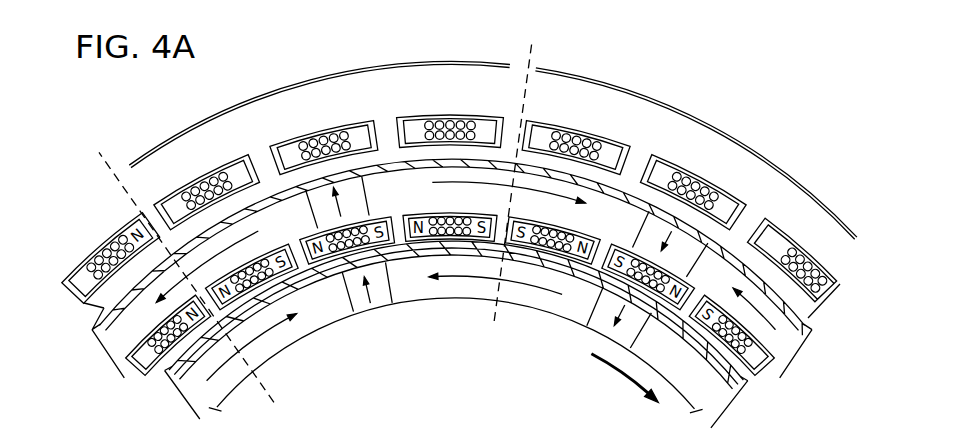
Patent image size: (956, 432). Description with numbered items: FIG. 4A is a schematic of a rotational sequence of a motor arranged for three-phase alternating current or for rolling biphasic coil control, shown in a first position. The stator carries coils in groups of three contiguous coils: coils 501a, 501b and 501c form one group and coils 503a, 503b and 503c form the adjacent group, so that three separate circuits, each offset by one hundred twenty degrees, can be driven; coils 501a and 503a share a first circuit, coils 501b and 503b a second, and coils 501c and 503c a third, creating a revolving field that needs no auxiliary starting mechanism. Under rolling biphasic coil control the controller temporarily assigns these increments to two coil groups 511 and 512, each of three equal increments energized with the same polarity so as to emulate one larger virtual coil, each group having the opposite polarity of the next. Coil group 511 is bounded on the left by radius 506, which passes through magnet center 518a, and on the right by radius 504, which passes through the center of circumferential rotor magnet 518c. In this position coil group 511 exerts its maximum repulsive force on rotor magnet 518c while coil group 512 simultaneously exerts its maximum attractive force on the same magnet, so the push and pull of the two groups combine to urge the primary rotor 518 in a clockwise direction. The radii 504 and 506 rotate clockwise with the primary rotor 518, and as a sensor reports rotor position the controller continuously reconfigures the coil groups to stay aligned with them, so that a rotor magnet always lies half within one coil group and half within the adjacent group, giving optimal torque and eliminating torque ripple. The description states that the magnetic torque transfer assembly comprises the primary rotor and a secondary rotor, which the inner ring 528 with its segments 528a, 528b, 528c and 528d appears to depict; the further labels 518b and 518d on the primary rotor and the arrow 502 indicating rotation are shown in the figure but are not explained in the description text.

The coil group 511 is at (316, 77).
The coil group 512 is at (719, 122).
The radius 504 is at (528, 64).
The radius 506 is at (122, 200).
The coil 501a is at (192, 191).
The coil 501b is at (314, 142).
The coil 501c is at (440, 118).
The coil 503a is at (585, 135).
The coil 503b is at (728, 180).
The coil 503c is at (800, 232).
The primary rotor 518 is at (137, 336).
The magnet center 518a is at (120, 328).
The rotor ring segment 518b is at (313, 207).
The circumferential rotor magnet 518c is at (397, 182).
The rotor ring segment 518d is at (636, 236).
The inner ring 528 is at (200, 398).
The inner ring segment 528a is at (293, 338).
The inner ring segment 528b is at (380, 300).
The inner ring segment 528c is at (527, 300).
The inner ring segment 528d is at (603, 341).
The rotation direction arrow 502 is at (624, 374).